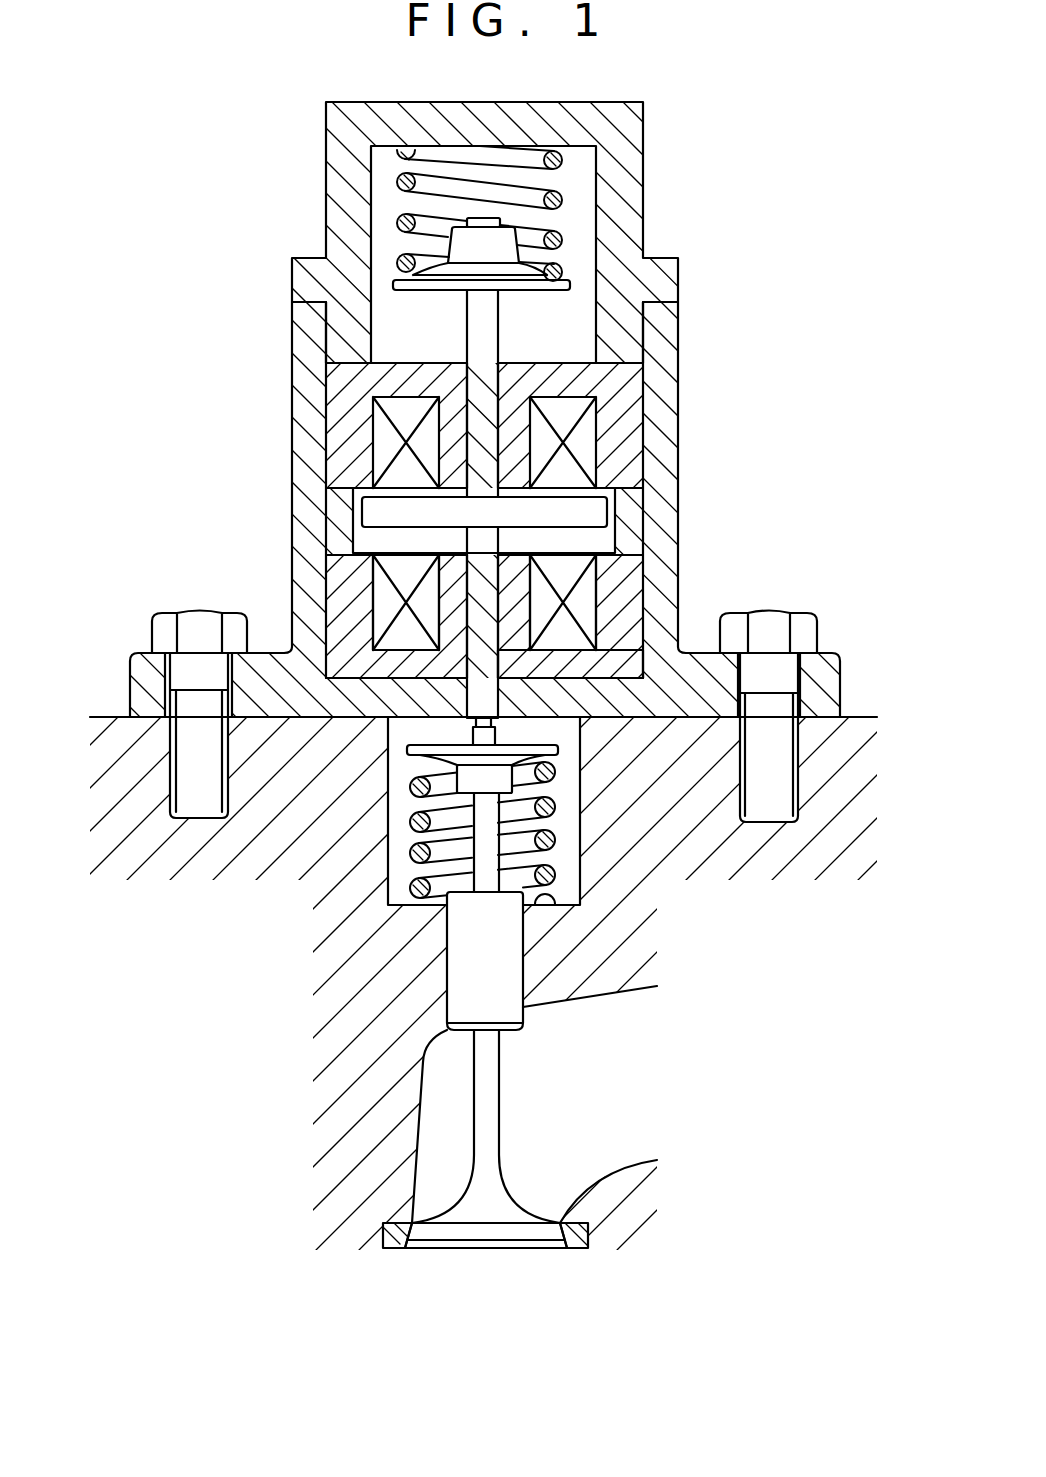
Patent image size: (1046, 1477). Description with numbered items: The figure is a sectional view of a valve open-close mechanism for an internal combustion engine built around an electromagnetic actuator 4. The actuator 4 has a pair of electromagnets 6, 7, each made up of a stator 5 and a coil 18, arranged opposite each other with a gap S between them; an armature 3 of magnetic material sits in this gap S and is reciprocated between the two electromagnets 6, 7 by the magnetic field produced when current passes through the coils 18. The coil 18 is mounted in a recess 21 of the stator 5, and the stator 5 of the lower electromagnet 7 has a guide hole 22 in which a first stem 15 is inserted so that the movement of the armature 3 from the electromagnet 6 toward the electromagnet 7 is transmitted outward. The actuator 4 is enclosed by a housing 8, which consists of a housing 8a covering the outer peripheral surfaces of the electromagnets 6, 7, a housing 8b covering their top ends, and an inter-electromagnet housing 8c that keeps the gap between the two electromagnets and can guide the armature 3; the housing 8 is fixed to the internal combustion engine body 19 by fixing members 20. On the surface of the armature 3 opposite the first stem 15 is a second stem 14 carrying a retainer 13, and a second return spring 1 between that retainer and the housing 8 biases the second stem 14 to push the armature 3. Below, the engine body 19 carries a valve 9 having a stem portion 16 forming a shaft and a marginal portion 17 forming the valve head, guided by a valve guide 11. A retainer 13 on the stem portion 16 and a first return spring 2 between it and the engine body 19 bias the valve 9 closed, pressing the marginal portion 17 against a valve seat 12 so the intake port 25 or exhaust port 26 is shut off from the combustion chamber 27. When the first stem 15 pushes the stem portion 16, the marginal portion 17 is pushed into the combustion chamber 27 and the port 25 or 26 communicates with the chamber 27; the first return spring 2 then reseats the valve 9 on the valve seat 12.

The second return spring 1 is at (556, 197).
The first return spring 2 is at (388, 875).
The armature 3 is at (362, 503).
The electromagnetic actuator 4 is at (220, 393).
The stator 5 is at (330, 363).
The electromagnet 6 is at (347, 422).
The electromagnet 7 is at (338, 593).
The housing 8 is at (775, 263).
The housing 8a is at (667, 357).
The housing 8b is at (665, 285).
The inter-electromagnet housing 8c is at (627, 515).
The valve 9 is at (477, 1113).
The valve guide 11 is at (510, 967).
The valve seat 12 is at (590, 1243).
The retainer 13 is at (460, 242).
The second stem 14 is at (480, 331).
The first stem 15 is at (477, 590).
The stem portion 16 is at (485, 1162).
The marginal portion 17 is at (523, 1235).
The coil 18 is at (582, 603).
The internal combustion engine body 19 is at (752, 942).
The fixing member 20 is at (192, 735).
The recess 21 is at (375, 611).
The guide hole 22 is at (510, 657).
The intake port 25 is at (588, 1100).
The exhaust port 26 is at (653, 1100).
The combustion chamber 27 is at (498, 1327).
The gap S is at (600, 545).